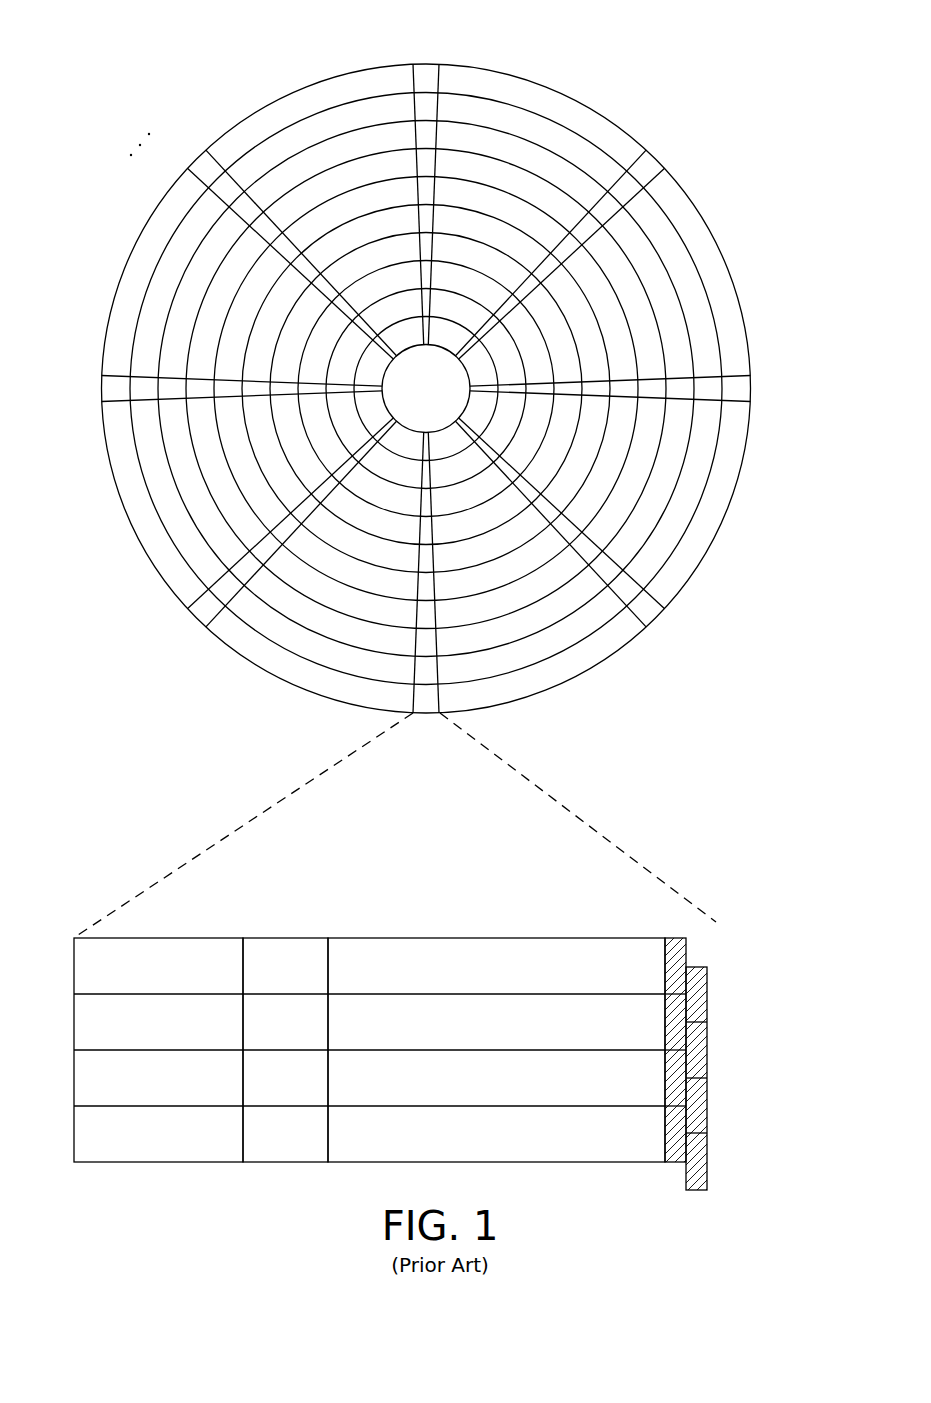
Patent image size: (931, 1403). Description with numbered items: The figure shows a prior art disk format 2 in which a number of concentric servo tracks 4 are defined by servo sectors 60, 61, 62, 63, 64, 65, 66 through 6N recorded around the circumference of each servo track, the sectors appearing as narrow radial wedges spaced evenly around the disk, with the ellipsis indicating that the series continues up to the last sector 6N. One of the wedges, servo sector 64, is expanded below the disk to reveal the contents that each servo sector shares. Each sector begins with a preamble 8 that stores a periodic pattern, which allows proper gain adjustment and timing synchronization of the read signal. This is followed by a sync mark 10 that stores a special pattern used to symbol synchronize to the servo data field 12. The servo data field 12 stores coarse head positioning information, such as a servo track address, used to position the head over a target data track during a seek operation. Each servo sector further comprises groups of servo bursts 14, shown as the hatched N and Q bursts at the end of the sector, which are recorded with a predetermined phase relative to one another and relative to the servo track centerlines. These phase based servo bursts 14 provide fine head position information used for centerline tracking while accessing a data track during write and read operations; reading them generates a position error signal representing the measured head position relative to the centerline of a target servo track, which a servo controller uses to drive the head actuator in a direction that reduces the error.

The disk format 2 is at (186, 67).
The servo tracks 4 is at (538, 126).
The servo sector 60 is at (427, 76).
The servo sector 61 is at (648, 168).
The servo sector 62 is at (740, 391).
The servo sector 63 is at (648, 613).
The servo sector 64 is at (283, 792).
The servo sector 65 is at (204, 612).
The servo sector 66 is at (108, 387).
The servo sector 6N is at (204, 166).
The preamble 8 is at (167, 938).
The sync mark 10 is at (288, 938).
The servo data field 12 is at (487, 938).
The servo bursts 14 is at (702, 935).